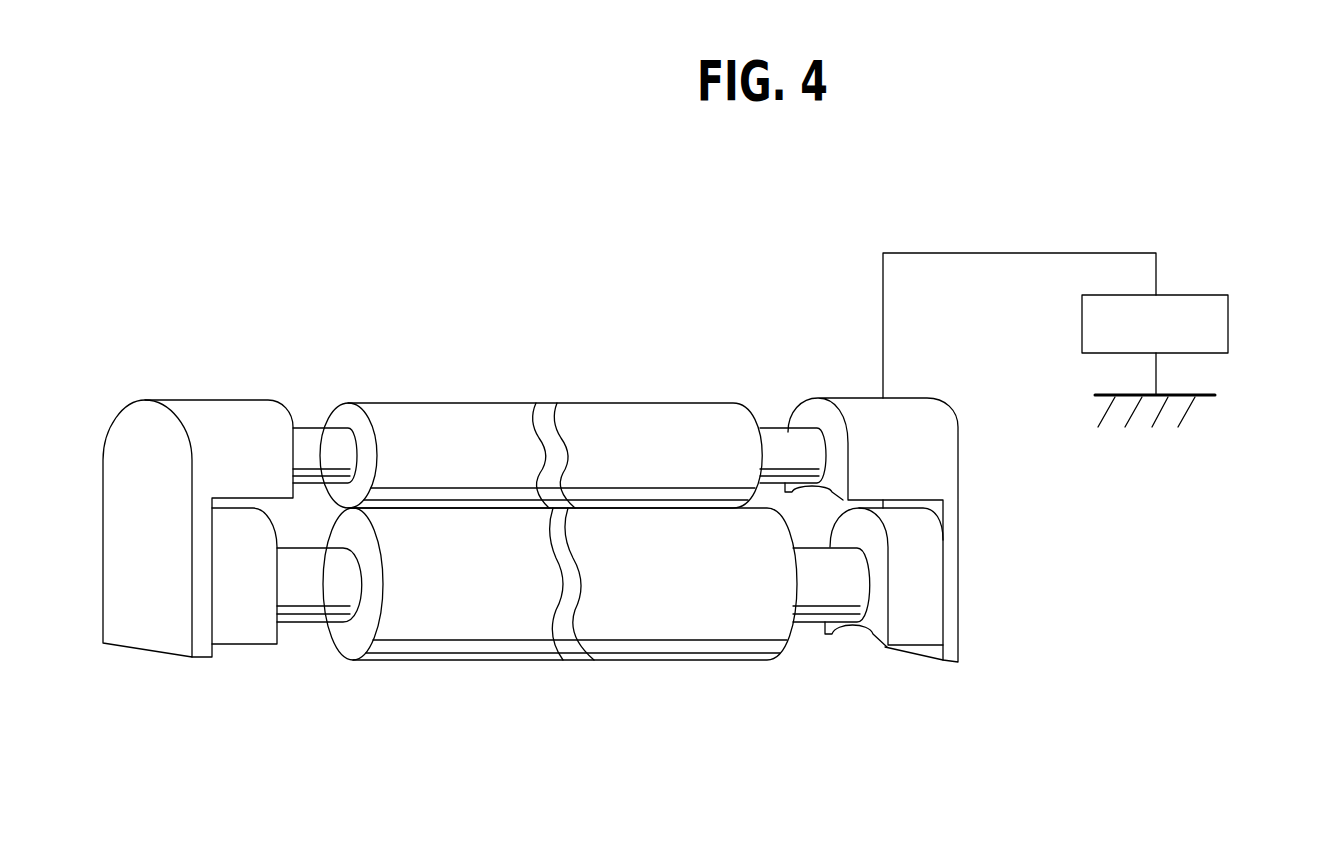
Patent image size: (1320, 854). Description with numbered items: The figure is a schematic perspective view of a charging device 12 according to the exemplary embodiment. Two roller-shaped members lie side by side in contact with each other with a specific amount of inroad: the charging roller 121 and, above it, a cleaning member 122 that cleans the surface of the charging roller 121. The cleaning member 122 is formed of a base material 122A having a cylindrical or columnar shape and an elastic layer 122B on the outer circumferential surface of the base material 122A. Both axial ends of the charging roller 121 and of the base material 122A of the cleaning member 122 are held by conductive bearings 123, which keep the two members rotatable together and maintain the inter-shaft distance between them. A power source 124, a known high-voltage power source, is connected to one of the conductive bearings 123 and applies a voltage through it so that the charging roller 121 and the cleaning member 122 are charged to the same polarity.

The charging device 12 is at (718, 226).
The charging roller 121 is at (440, 662).
The cleaning member 122 is at (468, 403).
The base material 122A is at (311, 428).
The elastic layer 122B is at (388, 418).
The conductive bearings 123 is at (190, 399).
The power source 124 is at (1230, 322).